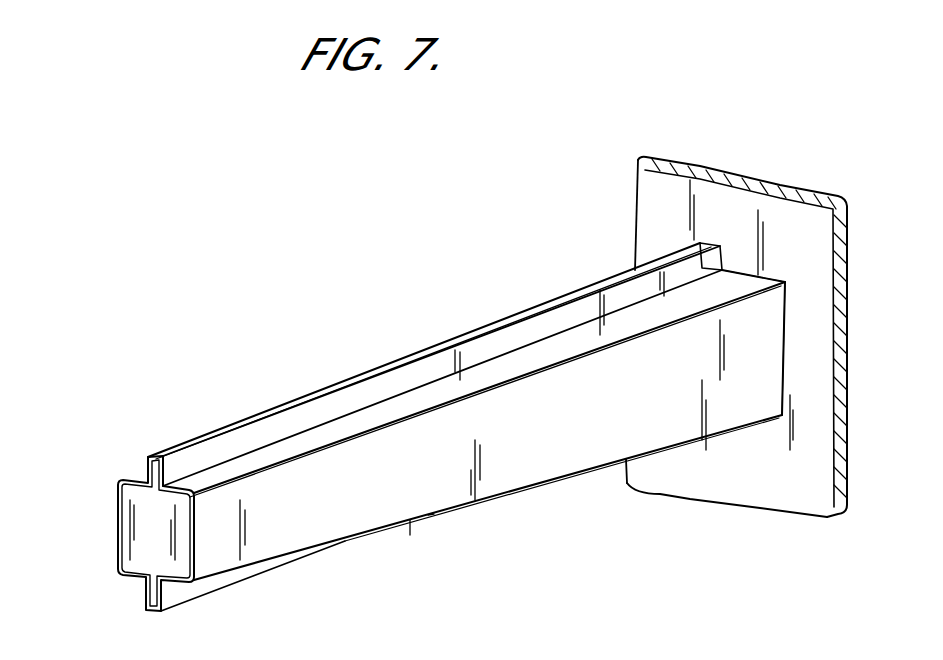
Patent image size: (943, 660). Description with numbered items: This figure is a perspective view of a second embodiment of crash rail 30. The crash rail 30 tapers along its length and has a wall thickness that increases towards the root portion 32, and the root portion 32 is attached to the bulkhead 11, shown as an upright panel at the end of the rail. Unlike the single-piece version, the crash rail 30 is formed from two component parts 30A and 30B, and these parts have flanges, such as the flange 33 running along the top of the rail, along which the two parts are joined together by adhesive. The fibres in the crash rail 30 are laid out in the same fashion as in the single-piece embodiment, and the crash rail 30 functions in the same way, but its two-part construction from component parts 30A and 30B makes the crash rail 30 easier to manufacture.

The bulkhead 11 is at (656, 179).
The crash rail 30 is at (318, 388).
The component part 30A is at (117, 521).
The component part 30B is at (210, 552).
The root portion 32 is at (777, 413).
The flange 33 is at (450, 360).